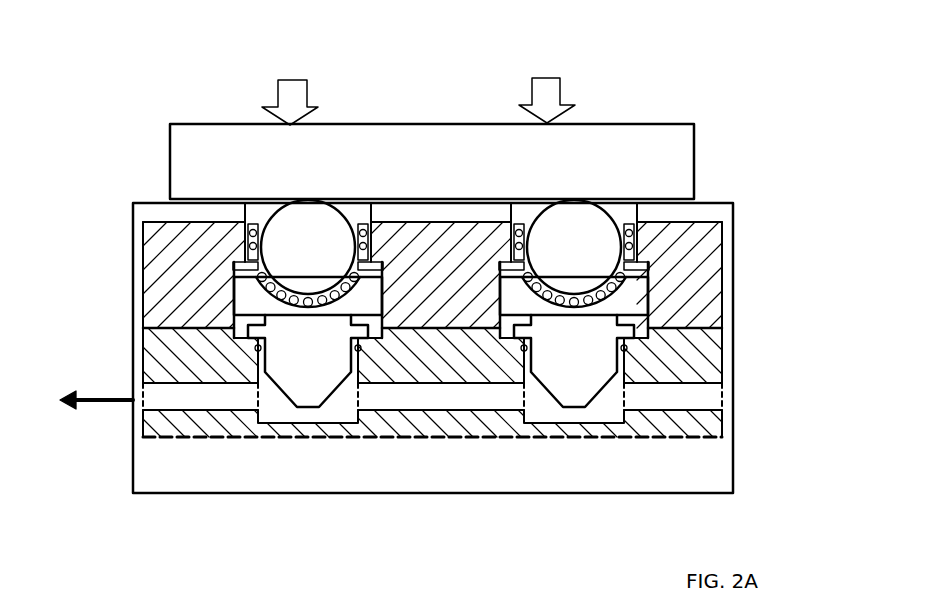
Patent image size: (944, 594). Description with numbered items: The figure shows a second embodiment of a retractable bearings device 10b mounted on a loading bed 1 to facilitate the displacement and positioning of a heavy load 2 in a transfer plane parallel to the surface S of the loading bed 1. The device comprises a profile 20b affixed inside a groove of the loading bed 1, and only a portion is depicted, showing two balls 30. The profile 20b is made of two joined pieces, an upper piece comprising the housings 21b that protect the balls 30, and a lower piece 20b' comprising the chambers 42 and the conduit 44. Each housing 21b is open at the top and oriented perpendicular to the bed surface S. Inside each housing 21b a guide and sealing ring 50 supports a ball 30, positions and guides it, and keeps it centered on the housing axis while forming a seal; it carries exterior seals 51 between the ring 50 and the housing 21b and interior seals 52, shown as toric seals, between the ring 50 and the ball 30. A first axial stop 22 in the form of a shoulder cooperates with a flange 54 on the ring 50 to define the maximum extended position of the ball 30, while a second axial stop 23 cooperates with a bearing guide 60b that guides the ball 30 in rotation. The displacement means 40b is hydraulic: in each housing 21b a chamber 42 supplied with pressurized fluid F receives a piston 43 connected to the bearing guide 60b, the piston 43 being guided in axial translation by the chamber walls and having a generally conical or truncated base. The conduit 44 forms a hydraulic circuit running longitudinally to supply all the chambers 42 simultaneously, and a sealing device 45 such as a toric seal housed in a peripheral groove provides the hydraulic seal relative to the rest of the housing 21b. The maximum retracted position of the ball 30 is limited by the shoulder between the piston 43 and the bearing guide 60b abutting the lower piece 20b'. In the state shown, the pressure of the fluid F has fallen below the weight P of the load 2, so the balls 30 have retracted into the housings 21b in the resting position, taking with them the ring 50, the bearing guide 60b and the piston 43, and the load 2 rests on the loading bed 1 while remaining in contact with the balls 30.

The loading bed 1 is at (131, 203).
The load 2 is at (445, 166).
The retractable bearings device 10b is at (710, 108).
The profile 20b is at (482, 315).
The lower piece of profile 20b' is at (485, 353).
The housing 21b is at (613, 215).
The first axial stop 22 is at (243, 250).
The second axial stop 23 is at (735, 199).
The ball 30 is at (320, 252).
The displacement means 40b is at (628, 389).
The chamber 42 is at (611, 413).
The piston 43 is at (580, 377).
The conduit 44 is at (712, 393).
The sealing device 45 is at (523, 353).
The guide and sealing ring 50 is at (622, 221).
The exterior seal 51 is at (240, 224).
The interior seal 52 is at (256, 226).
The flange 54 is at (236, 280).
The bearing guide 60b is at (655, 253).
The surface of loading bed S is at (146, 200).
The load force P is at (422, 100).
The pressurized fluid F is at (96, 390).